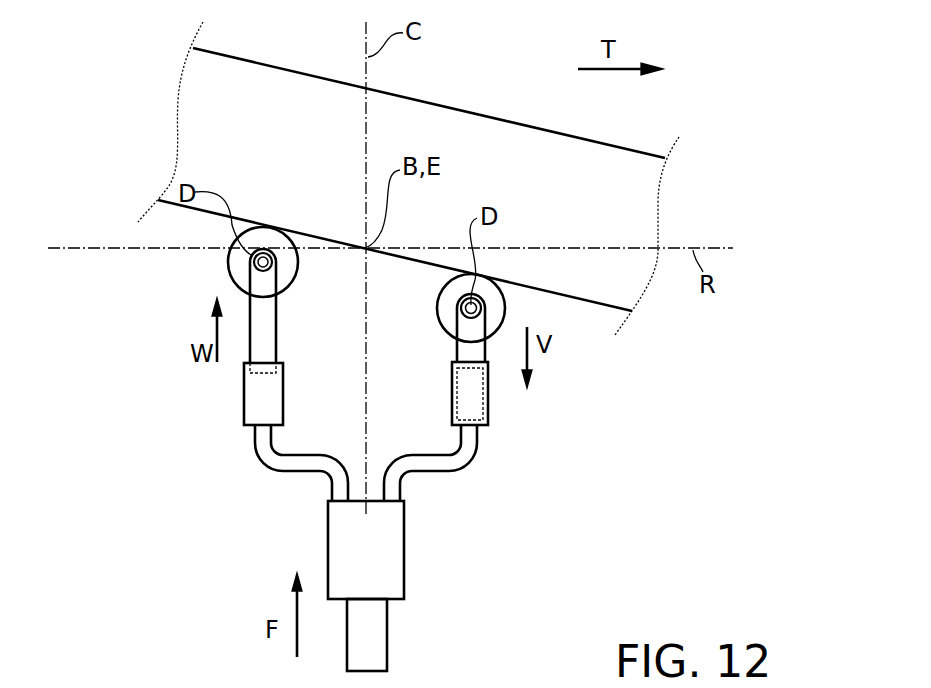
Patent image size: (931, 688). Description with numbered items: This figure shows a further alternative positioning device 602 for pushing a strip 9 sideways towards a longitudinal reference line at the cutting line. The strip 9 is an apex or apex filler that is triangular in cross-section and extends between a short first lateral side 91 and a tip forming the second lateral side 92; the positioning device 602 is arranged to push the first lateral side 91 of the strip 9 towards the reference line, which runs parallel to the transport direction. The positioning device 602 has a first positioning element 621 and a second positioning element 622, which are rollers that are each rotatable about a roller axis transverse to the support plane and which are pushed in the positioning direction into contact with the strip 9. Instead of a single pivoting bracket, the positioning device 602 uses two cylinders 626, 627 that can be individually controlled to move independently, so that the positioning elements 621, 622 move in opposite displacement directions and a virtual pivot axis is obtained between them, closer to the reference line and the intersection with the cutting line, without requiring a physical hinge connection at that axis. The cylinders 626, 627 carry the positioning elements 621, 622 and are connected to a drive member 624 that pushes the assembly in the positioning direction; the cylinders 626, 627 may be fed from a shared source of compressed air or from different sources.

The strip 9 is at (538, 152).
The second lateral side 92 is at (285, 68).
The first lateral side 91 is at (582, 304).
The positioning element 622 is at (240, 272).
The positioning element 621 is at (442, 308).
The cylinder 627 is at (252, 378).
The cylinder 626 is at (475, 395).
The drive member 624 is at (345, 543).
The positioning device 602 is at (173, 518).